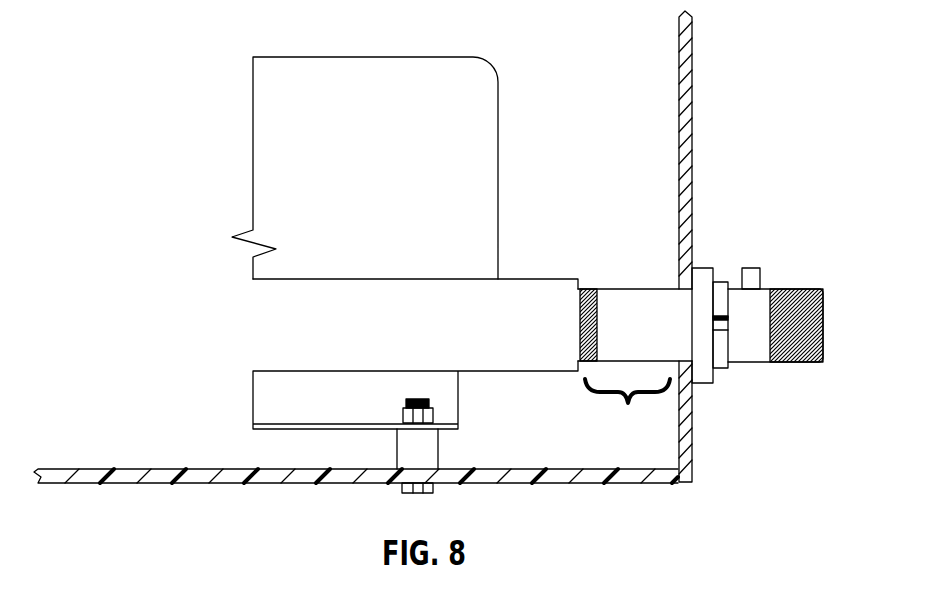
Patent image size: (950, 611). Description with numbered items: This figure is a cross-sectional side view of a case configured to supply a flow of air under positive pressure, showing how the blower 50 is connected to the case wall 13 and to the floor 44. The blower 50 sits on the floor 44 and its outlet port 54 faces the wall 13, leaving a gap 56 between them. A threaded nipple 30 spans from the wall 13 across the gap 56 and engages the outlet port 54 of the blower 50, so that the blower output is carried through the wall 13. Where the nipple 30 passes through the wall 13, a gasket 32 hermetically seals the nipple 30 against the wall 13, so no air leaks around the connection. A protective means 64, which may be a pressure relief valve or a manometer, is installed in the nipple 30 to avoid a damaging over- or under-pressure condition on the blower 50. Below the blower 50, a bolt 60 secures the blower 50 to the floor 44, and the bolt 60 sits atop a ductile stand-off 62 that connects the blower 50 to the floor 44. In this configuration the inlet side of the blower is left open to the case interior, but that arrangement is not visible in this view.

The wall 13 is at (692, 112).
The threaded nipple 30 is at (765, 362).
The gasket 32 is at (702, 383).
The floor 44 is at (617, 478).
The blower 50 is at (500, 87).
The outlet port 54 is at (548, 279).
The gap 56 is at (628, 404).
The bolt 60 is at (403, 408).
The ductile stand-off 62 is at (438, 440).
The protective means 64 is at (753, 265).